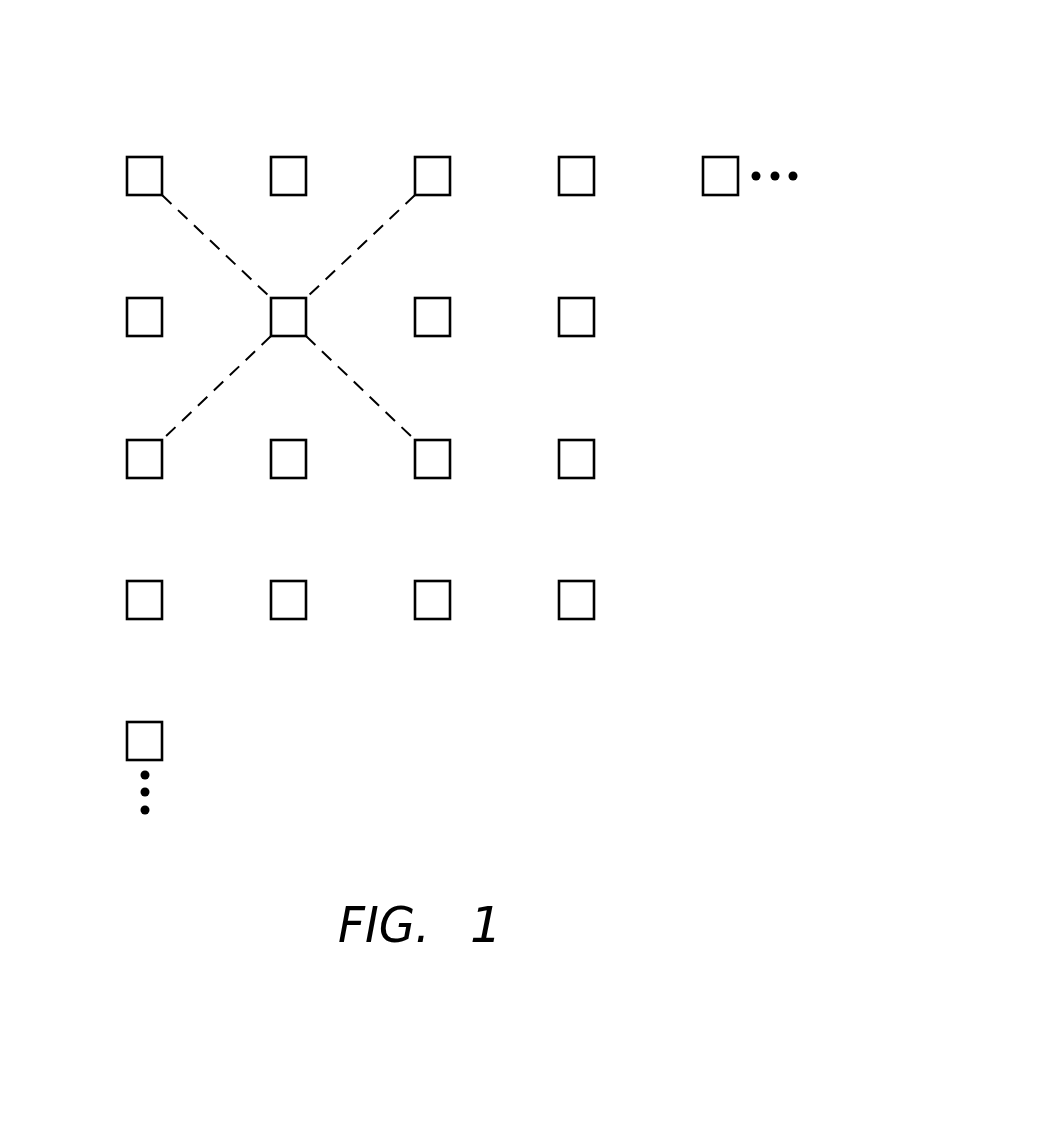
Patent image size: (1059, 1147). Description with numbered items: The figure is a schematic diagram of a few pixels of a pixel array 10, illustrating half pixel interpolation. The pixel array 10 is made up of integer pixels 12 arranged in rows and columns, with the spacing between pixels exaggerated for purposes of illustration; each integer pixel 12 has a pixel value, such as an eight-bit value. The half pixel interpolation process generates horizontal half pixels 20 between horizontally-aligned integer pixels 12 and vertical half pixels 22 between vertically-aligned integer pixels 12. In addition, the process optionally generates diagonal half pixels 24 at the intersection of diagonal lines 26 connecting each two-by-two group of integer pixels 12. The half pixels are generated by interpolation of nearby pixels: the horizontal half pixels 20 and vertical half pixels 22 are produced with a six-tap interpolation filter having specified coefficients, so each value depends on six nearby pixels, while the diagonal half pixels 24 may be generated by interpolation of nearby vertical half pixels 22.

The pixel array 10 is at (634, 40).
The integer pixel 12 is at (127, 165).
The horizontal half pixel 20 is at (306, 165).
The vertical half pixel 22 is at (127, 311).
The diagonal half pixel 24 is at (306, 311).
The diagonal line 26 is at (193, 228).